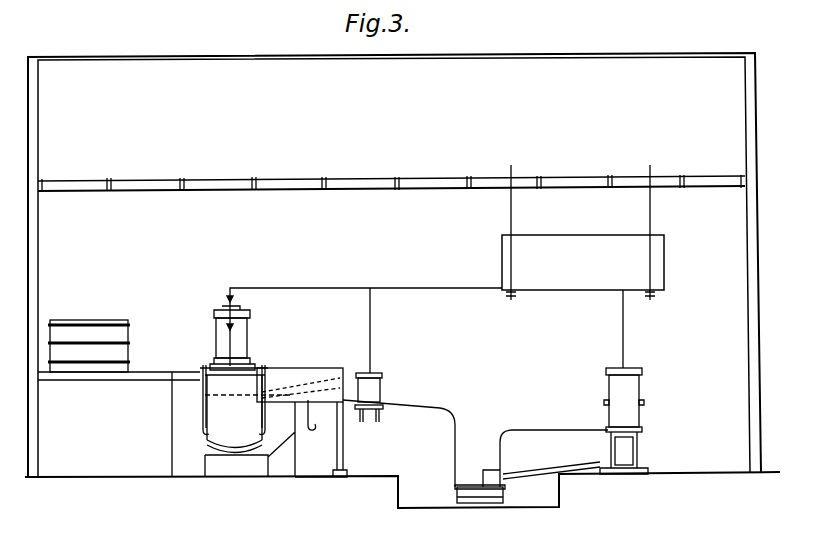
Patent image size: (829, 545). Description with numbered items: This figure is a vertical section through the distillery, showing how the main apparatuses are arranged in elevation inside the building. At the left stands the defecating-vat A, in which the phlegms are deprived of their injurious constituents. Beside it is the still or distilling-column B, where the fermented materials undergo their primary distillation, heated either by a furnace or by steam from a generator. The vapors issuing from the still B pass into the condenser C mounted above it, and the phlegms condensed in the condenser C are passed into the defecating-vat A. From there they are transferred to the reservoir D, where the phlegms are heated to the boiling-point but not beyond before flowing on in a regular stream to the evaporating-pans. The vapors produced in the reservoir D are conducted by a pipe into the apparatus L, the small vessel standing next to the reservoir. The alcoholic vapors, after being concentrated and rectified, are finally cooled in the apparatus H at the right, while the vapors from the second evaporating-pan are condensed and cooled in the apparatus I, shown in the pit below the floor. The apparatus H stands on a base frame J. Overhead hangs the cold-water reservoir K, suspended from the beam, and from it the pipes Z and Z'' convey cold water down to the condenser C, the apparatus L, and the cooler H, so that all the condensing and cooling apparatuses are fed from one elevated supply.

The defecating-vat A is at (89, 346).
The still or distilling-column B is at (245, 421).
The condenser C is at (232, 335).
The reservoir D is at (302, 422).
The cooler H is at (624, 421).
The condenser and cooler I is at (480, 494).
The pump base frame J is at (624, 451).
The cold-water reservoir K is at (583, 262).
The vapor-receiving apparatus L is at (369, 397).
The water pipe Z is at (364, 320).
The water pipe Z'' is at (633, 329).